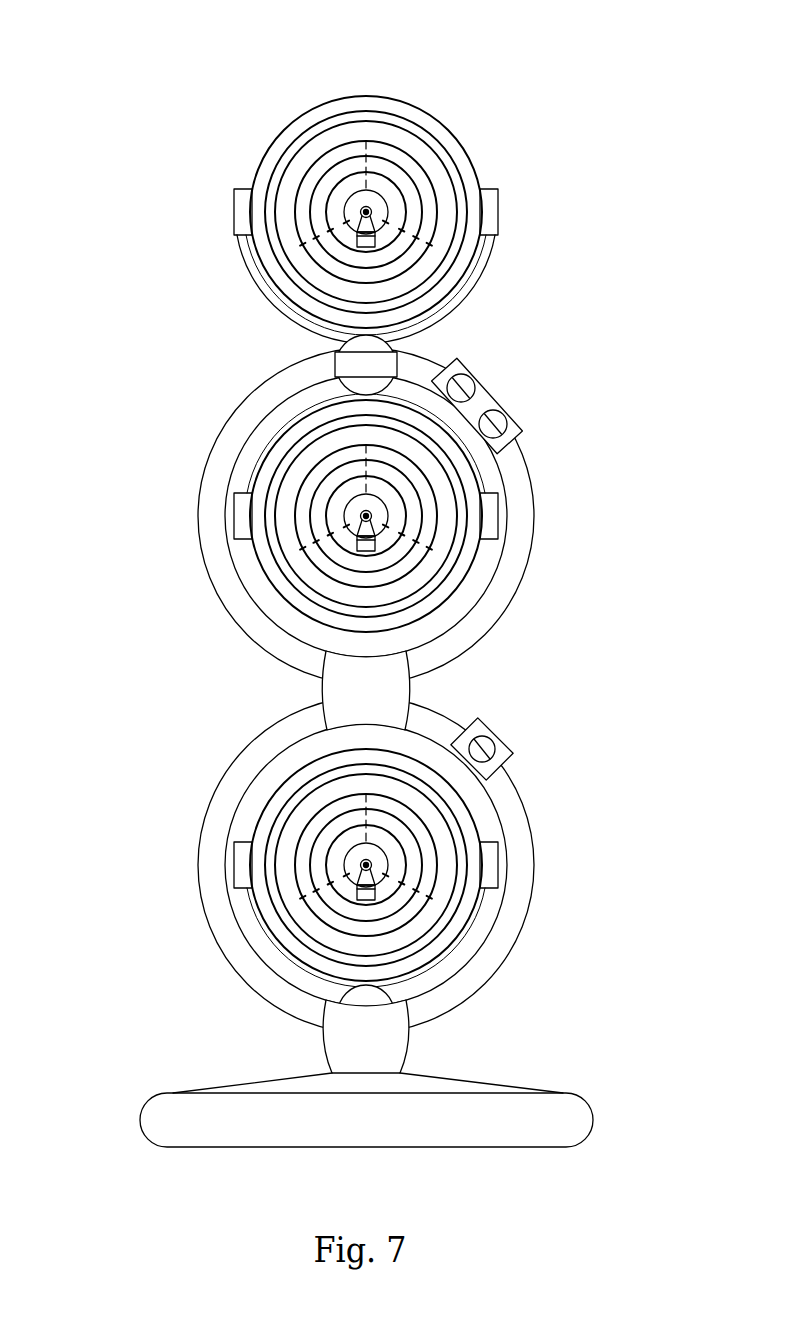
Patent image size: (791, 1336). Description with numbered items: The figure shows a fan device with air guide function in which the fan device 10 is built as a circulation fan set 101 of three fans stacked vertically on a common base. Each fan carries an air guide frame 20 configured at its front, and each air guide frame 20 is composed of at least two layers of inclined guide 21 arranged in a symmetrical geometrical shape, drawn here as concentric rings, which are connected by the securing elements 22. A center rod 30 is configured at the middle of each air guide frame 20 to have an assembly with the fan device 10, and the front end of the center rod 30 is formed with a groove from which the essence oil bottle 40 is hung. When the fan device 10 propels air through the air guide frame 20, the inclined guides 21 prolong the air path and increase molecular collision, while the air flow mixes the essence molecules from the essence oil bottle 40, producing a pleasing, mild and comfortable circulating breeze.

The fan device 10 is at (372, 84).
The circulation fan set 101 is at (200, 153).
The air guide frame 20 is at (447, 142).
The inclined guide 21 is at (305, 180).
The securing element 22 is at (366, 142).
The center rod 30 is at (358, 218).
The essence oil bottle 40 is at (365, 241).